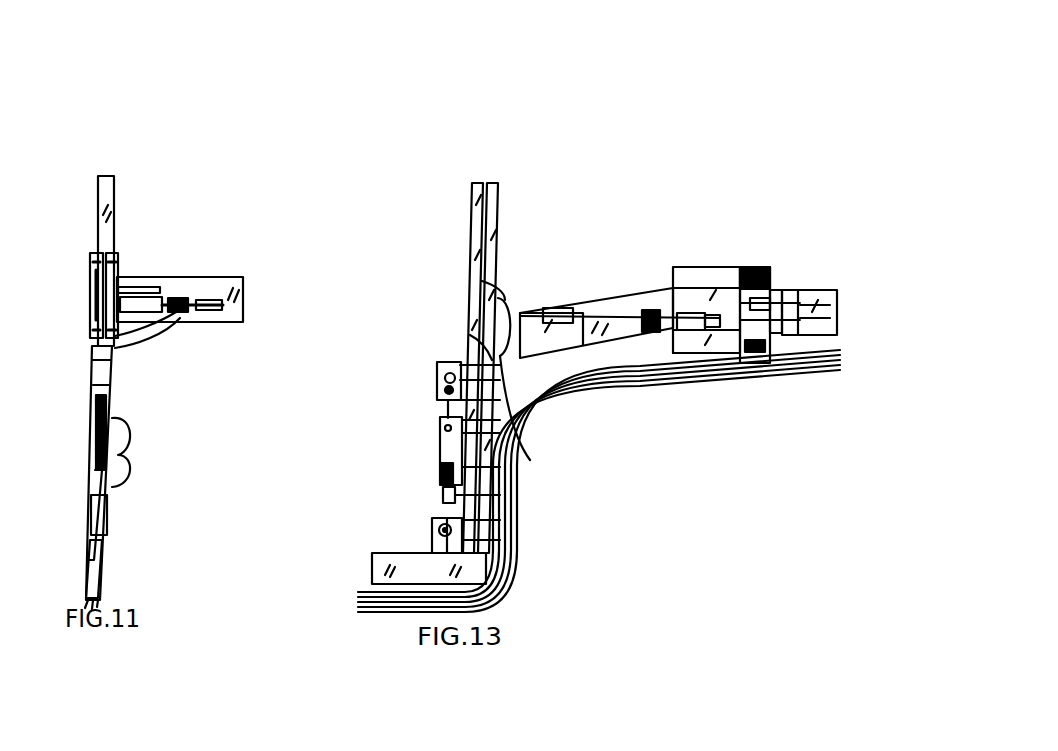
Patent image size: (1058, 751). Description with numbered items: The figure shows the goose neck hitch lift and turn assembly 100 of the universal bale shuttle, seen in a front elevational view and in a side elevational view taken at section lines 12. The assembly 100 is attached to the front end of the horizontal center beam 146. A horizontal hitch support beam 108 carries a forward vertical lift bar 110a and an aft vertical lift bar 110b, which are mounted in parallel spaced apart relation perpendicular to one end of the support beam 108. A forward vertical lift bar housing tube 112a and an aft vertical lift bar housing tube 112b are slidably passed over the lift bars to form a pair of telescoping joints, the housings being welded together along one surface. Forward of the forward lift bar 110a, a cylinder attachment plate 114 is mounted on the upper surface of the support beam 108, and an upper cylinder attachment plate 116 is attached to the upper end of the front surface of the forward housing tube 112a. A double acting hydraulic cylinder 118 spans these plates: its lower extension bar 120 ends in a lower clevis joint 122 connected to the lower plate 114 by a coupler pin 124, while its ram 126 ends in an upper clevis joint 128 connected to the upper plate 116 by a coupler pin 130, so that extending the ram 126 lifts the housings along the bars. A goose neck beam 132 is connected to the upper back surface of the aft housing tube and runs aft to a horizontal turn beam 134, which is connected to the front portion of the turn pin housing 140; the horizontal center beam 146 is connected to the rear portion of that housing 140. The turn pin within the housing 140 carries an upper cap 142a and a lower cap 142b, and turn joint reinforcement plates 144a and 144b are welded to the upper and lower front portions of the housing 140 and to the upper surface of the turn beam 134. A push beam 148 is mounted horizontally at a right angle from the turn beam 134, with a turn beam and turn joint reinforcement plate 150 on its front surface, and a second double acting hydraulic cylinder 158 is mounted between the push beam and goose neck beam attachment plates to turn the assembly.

In FIG. 11, the goose neck hitch lift and turn assembly 100 is at (194, 80).
In FIG. 13, the goose neck hitch lift and turn assembly 100 is at (716, 96).
In FIG. 11, the section line 12- 12 is at (110, 148).
In FIG. 11, the horizontal hitch support beam 108 is at (103, 560).
In FIG. 13, the horizontal hitch support beam 108 is at (370, 565).
In FIG. 11, the forward vertical lift bar 110a is at (113, 178).
In FIG. 13, the forward vertical lift bar 110a is at (472, 186).
In FIG. 13, the aft vertical lift bar 110b is at (497, 193).
In FIG. 13, the forward vertical lift bar housing tube 112a is at (470, 335).
In FIG. 13, the aft vertical lift bar housing tube 112b is at (482, 281).
In FIG. 11, the cylinder attachment plate 114 is at (108, 532).
In FIG. 13, the cylinder attachment plate 114 is at (432, 545).
In FIG. 13, the upper cylinder attachment plate 116 is at (440, 372).
In FIG. 11, the double acting hydraulic cylinder 118 is at (113, 413).
In FIG. 13, the double acting hydraulic cylinder 118 is at (445, 455).
In FIG. 13, the lower extension bar 120 is at (505, 478).
In FIG. 13, the lower clevis joint 122 is at (518, 500).
In FIG. 13, the coupler pin 124 is at (458, 533).
In FIG. 13, the ram 126 is at (527, 428).
In FIG. 13, the upper clevis joint 128 is at (440, 398).
In FIG. 13, the coupler pin 130 is at (535, 400).
In FIG. 13, the goose neck beam 132 is at (645, 310).
In FIG. 13, the horizontal turn beam 134 is at (690, 287).
In FIG. 13, the turn pin housing 140 is at (697, 280).
In FIG. 13, the upper cap 142a is at (752, 270).
In FIG. 13, the lower cap 142b is at (782, 368).
In FIG. 13, the turn joint reinforcement plate 144a is at (710, 268).
In FIG. 13, the turn joint reinforcement plate 144b is at (685, 375).
In FIG. 13, the horizontal center beam 146 is at (832, 290).
In FIG. 11, the push beam 148 is at (203, 277).
In FIG. 13, the push beam 148 is at (820, 320).
In FIG. 11, the turn beam and turn joint reinforcement plate 150 is at (147, 289).
In FIG. 13, the turn beam and turn joint reinforcement plate 150 is at (775, 290).
In FIG. 11, the double acting hydraulic cylinder 158 is at (180, 325).